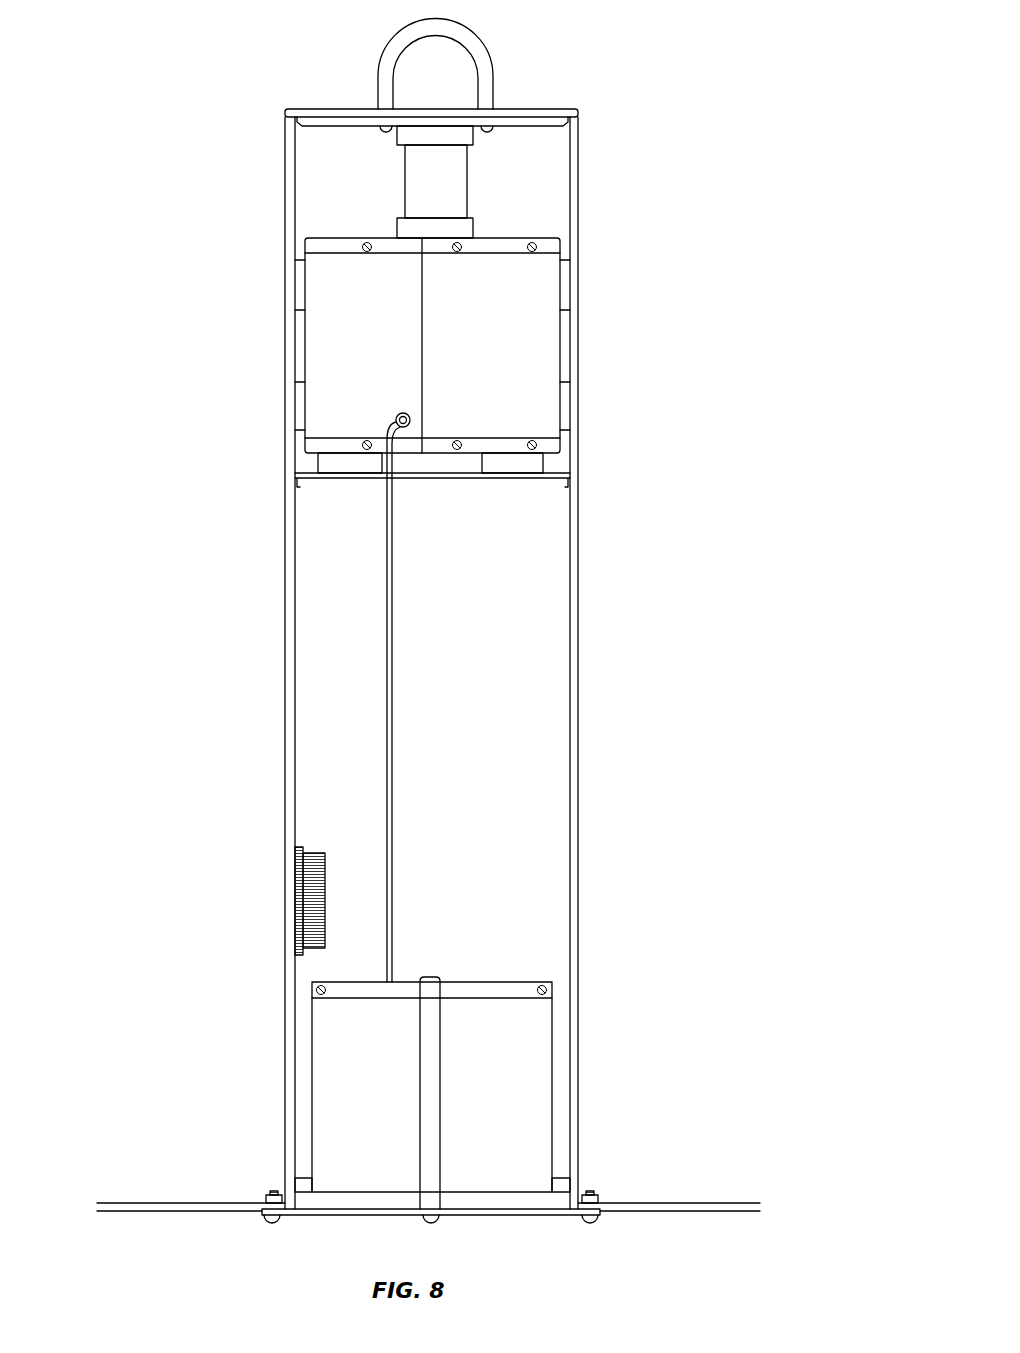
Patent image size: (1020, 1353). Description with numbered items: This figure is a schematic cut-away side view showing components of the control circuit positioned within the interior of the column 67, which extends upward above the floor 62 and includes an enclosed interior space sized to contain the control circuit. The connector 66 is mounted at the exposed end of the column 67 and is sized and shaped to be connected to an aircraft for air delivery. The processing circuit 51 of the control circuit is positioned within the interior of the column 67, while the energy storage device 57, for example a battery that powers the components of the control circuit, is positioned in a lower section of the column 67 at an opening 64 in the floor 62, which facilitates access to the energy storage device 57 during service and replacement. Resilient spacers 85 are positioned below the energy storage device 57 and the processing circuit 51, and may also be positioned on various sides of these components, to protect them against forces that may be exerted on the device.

The connector 66 is at (475, 48).
The resilient spacer 85 is at (453, 168).
The processing circuit 51 is at (333, 360).
The column 67 is at (578, 405).
The energy storage device 57 is at (517, 1075).
The opening 64 is at (287, 1200).
The floor 62 is at (150, 1200).